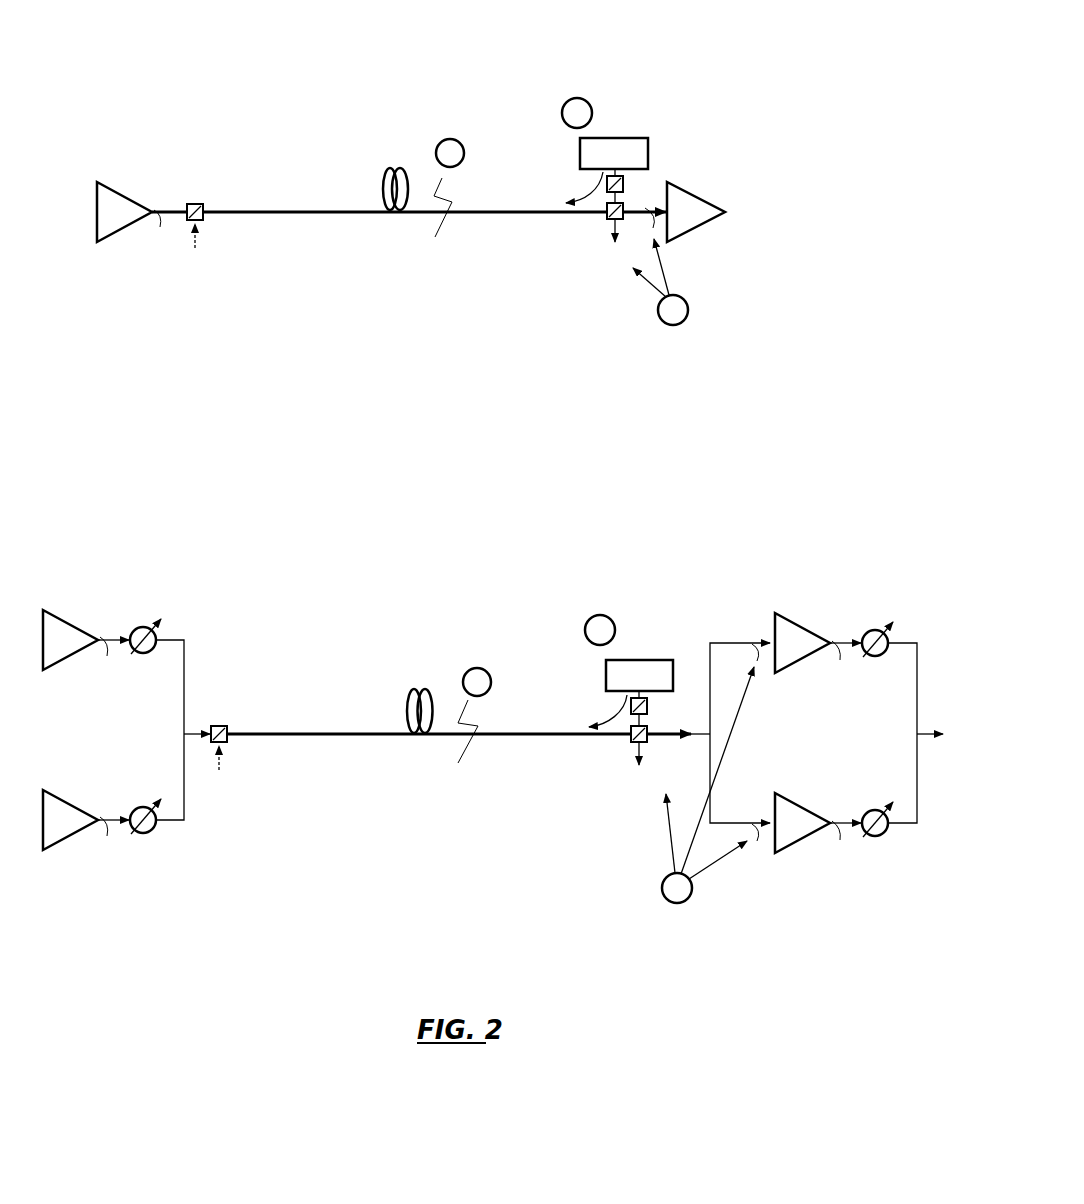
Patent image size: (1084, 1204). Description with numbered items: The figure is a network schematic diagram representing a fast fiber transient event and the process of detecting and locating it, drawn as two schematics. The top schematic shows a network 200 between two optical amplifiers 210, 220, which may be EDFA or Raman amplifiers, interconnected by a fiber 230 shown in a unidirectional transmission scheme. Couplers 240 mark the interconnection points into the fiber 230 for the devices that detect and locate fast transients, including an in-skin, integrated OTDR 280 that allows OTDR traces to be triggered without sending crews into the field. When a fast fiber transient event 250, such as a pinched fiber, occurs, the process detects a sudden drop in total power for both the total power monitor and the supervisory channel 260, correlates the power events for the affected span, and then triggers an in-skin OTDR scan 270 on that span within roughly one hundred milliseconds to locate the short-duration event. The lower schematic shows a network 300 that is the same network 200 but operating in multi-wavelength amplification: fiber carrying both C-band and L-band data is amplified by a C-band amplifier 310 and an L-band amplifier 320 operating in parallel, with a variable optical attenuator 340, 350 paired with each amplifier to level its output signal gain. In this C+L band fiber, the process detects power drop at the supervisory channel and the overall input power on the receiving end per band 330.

The network 200 is at (433, 68).
The optical amplifier 210 is at (720, 201).
The optical amplifier 220 is at (113, 184).
The fiber 230 is at (262, 209).
The couplers 240 is at (206, 218).
The fast fiber transient event 250 is at (458, 138).
The supervisory channel power drop detection 260 is at (688, 301).
The in-skin OTDR scan 270 is at (584, 98).
The in-skin OTDR 280 is at (620, 137).
The network 300 is at (433, 549).
The C-band amplifier 310 is at (792, 616).
The L-band amplifier 320 is at (792, 797).
The per-band power drop detection 330 is at (688, 900).
The variable optical attenuator 340 is at (878, 628).
The variable optical attenuator 350 is at (880, 838).